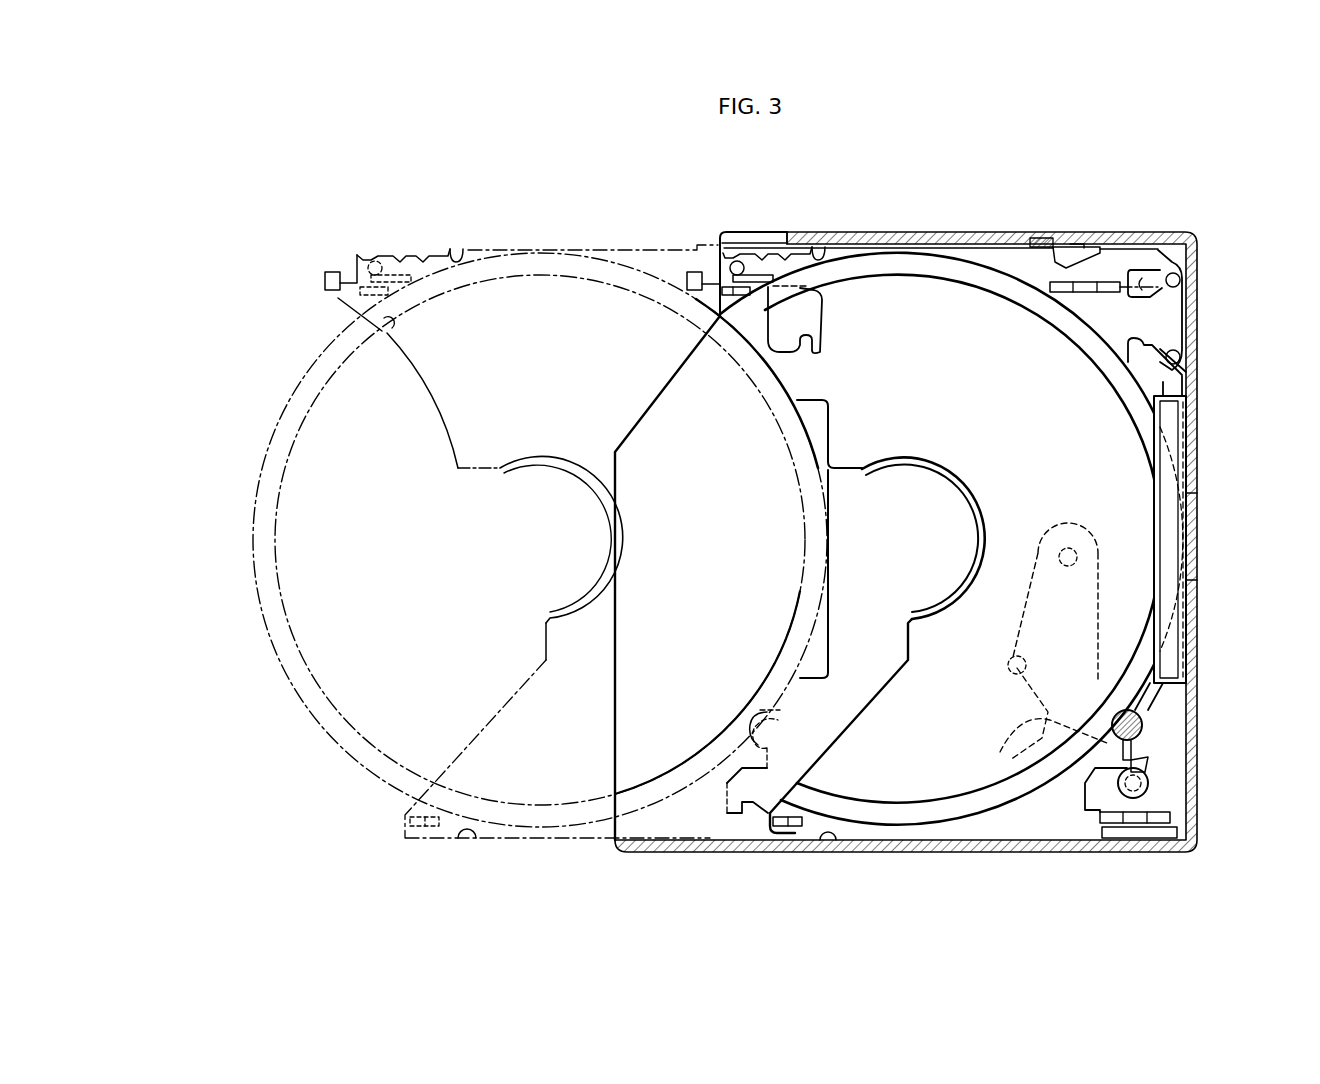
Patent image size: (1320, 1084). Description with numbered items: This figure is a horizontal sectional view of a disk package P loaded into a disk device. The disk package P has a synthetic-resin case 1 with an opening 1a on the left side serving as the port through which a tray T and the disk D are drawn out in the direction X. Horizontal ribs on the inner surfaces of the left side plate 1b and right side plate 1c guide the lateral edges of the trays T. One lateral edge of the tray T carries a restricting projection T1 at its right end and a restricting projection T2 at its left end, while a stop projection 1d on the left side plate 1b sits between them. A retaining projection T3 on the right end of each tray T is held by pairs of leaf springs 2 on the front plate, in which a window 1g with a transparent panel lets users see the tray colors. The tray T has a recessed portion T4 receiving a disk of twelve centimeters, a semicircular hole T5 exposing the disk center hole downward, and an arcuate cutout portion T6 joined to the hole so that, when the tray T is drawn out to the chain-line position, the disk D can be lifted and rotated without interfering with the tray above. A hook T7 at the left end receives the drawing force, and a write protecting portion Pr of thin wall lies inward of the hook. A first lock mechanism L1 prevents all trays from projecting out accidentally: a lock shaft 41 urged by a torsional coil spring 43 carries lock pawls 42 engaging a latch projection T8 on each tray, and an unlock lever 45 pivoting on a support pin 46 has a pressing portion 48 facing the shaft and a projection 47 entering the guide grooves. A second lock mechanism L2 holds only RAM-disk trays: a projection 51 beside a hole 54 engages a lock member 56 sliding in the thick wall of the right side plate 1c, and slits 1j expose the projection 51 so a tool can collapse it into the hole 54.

The case 1 is at (742, 862).
The opening 1a is at (612, 718).
The left side plate 1b is at (985, 852).
The right side plate 1c is at (975, 244).
The stop projection 1d is at (805, 852).
The window 1g is at (1197, 560).
The slit 1j is at (1084, 245).
The leaf spring 2 is at (1178, 384).
The lock shaft 41 is at (1150, 783).
The lock pawl 42 is at (1090, 792).
The torsional coil spring 43 is at (1152, 800).
The unlock lever 45 is at (1010, 748).
The support pin 46 is at (1075, 540).
The projection 47 is at (1010, 672).
The pressing portion 48 is at (1142, 742).
The projection 51 is at (1075, 246).
The hole 54 is at (1062, 268).
The lock member 56 is at (1042, 238).
The disk D is at (282, 650).
The first lock mechanism L1 is at (1160, 752).
The second lock mechanism L2 is at (1075, 283).
The disk package P is at (1202, 693).
The write protecting portion Pr is at (737, 260).
The tray T is at (872, 722).
The restricting projection T1 is at (1165, 840).
The restricting projection T2 is at (770, 845).
The retaining projection T3 is at (1166, 312).
The recessed portion T4 is at (967, 263).
The semicircular hole T5 is at (962, 513).
The cutout portion T6 is at (800, 440).
The hook T7 is at (690, 268).
The latch projection T8 is at (1108, 812).
The direction X is at (1222, 541).